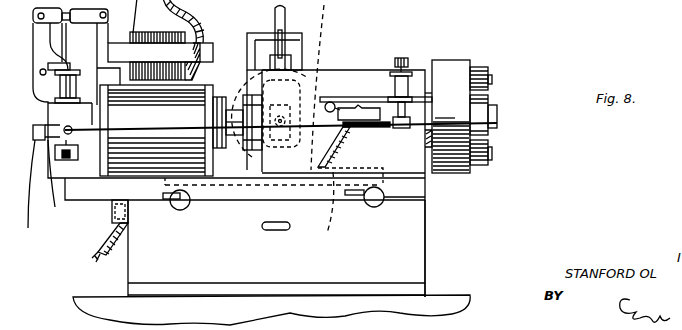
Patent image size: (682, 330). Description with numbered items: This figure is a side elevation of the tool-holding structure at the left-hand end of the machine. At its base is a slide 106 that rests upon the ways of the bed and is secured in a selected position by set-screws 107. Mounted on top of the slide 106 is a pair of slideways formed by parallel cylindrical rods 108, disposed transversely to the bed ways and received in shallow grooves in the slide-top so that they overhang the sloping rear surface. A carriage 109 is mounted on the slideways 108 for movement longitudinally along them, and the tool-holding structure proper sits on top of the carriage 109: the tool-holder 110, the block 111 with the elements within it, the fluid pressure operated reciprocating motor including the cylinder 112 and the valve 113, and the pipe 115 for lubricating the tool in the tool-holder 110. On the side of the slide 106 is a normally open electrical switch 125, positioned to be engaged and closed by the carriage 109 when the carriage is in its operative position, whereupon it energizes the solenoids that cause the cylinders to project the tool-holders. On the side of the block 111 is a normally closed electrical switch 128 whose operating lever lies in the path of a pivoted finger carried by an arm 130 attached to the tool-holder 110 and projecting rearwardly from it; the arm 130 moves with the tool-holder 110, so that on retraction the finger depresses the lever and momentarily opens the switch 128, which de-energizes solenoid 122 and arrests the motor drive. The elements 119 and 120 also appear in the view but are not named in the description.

The slide 106 is at (417, 243).
The set-screws 107 is at (291, 86).
The parallel cylindrical rods 108 is at (183, 210).
The carriage 109 is at (413, 183).
The tool-holder 110 is at (456, 65).
The block 111 is at (352, 70).
The cylinder 112 is at (127, 150).
The valve 113 is at (49, 184).
The pipe 115 is at (453, 124).
The cam path 119 is at (339, 215).
The gear 120 is at (284, 87).
The solenoid 122 is at (258, 32).
The normally open electrical switch 125 is at (112, 214).
The normally closed electrical switch 128 is at (362, 124).
The arm 130 is at (370, 97).